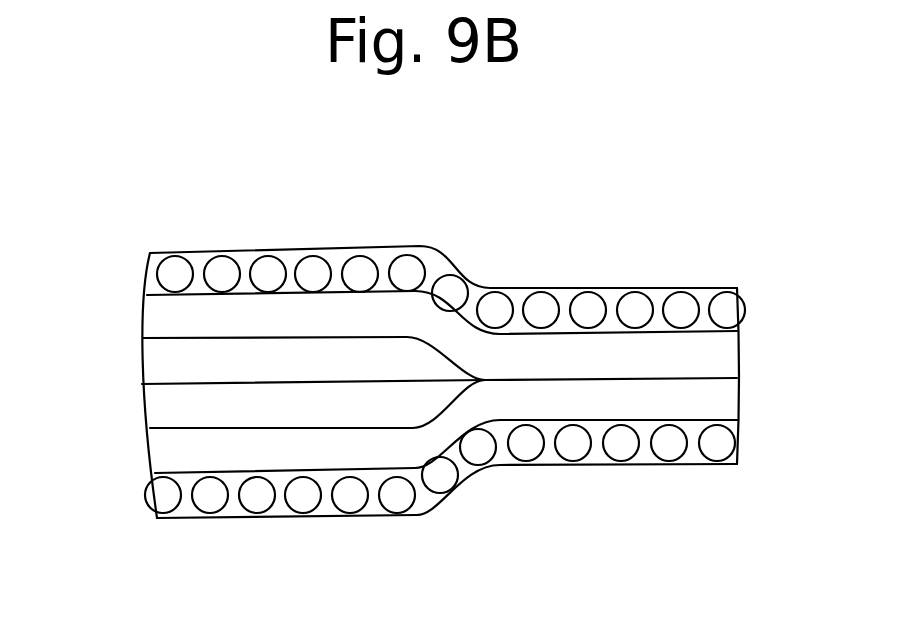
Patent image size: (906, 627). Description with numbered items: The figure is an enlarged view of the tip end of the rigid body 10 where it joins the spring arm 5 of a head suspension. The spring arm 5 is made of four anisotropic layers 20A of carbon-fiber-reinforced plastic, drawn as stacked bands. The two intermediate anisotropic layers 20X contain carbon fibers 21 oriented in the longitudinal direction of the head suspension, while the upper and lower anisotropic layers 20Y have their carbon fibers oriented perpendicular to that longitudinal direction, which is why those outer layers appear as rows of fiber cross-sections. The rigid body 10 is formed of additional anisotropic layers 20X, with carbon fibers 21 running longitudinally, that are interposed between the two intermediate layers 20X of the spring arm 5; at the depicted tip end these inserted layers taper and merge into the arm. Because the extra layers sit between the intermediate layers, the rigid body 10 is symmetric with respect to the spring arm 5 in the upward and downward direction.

The rigid body 10 is at (284, 235).
The spring arm 5 is at (647, 490).
The anisotropic layer 20A is at (385, 358).
The carbon fiber 21 is at (590, 306).
The intermediate anisotropic layer 20X is at (172, 320).
The upper and lower anisotropic layer 20Y is at (705, 322).